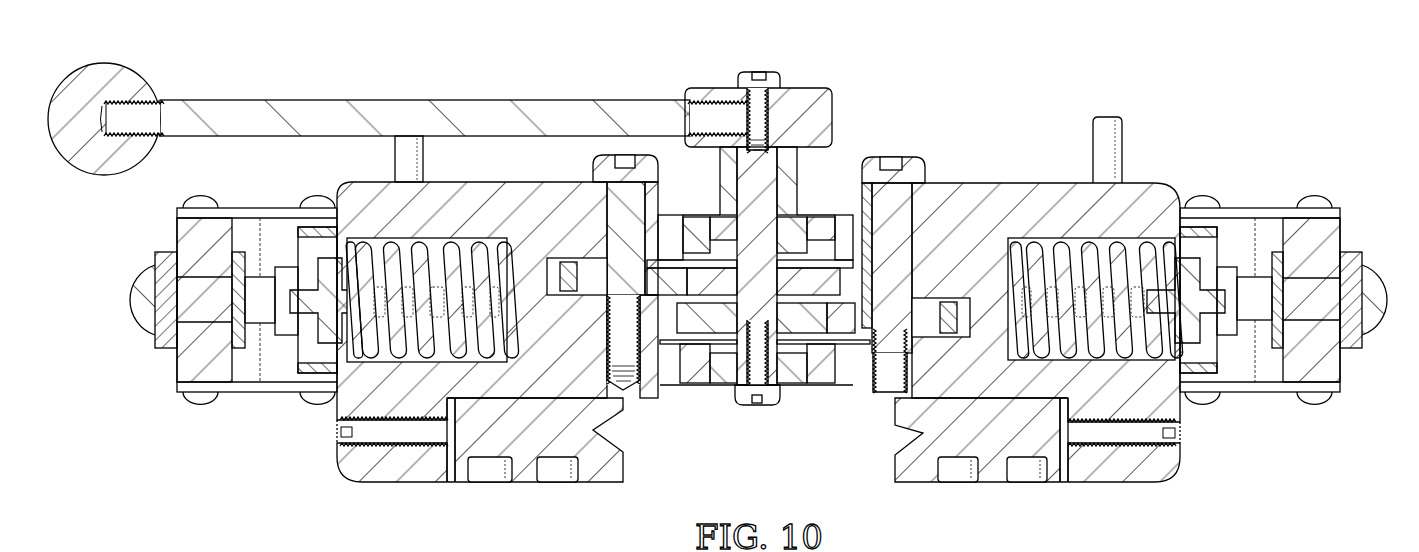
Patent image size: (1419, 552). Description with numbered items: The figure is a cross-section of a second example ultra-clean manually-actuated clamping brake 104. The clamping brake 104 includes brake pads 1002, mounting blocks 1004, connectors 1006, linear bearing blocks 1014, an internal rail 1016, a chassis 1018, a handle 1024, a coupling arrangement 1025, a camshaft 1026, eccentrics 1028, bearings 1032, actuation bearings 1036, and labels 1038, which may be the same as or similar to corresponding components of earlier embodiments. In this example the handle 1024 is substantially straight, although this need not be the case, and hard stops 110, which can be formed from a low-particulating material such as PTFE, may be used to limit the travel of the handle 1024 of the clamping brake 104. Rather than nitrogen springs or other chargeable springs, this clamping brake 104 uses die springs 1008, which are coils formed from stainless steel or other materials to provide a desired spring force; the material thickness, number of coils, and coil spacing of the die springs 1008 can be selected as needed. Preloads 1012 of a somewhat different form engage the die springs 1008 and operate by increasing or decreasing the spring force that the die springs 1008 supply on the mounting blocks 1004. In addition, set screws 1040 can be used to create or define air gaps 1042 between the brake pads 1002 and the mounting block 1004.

The clamping brake 104 is at (966, 74).
The hard stop 110 is at (1125, 146).
The brake pad 1002 is at (598, 478).
The mounting block 1004 is at (366, 476).
The connector 1006 is at (1023, 472).
The die spring 1008 is at (515, 330).
The preload 1012 is at (1372, 336).
The linear bearing block 1014 is at (317, 268).
The internal rail 1016 is at (1232, 265).
The chassis 1018 is at (1338, 233).
The handle 1024 is at (356, 100).
The coupling arrangement 1025 is at (700, 89).
The camshaft 1026 is at (770, 190).
The eccentric 1028 is at (700, 332).
The bearing 1032 is at (736, 388).
The actuation bearing 1036 is at (852, 335).
The label 1038 is at (242, 207).
The set screw 1040 is at (337, 414).
The air gap 1042 is at (450, 483).